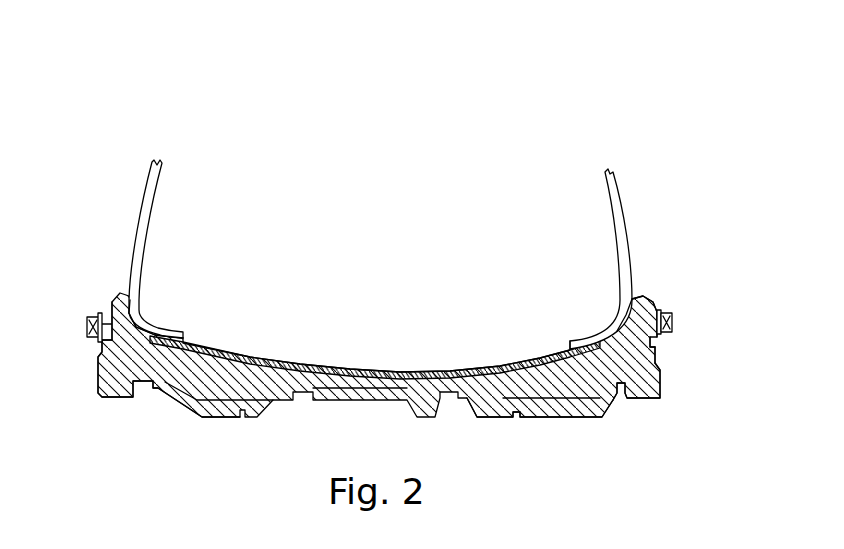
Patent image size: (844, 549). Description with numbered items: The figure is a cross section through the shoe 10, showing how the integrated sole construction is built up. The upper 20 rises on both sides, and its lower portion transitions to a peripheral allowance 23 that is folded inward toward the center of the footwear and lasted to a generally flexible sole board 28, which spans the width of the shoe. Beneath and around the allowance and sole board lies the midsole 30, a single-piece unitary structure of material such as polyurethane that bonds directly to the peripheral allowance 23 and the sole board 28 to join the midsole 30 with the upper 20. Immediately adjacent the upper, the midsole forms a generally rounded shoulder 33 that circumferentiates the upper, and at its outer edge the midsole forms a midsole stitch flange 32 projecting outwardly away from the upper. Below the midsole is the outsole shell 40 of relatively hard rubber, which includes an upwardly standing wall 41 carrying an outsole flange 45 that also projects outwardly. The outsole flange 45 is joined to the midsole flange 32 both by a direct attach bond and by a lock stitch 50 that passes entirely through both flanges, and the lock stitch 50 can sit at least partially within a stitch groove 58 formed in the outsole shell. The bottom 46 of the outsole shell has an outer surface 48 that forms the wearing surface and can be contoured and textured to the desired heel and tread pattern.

The shoe 10 is at (94, 99).
The upper 20 is at (124, 245).
The peripheral allowance 23 is at (574, 341).
The sole board 28 is at (253, 361).
The midsole 30 is at (136, 351).
The midsole stitch flange 32 is at (672, 313).
The shoulder 33 is at (634, 298).
The outsole shell 40 is at (115, 399).
The upwardly standing wall 41 is at (658, 367).
The outsole flange 45 is at (652, 338).
The bottom 46 is at (523, 398).
The outer surface 48 is at (500, 418).
The lock stitch 50 is at (660, 306).
The stitch groove 58 is at (654, 343).